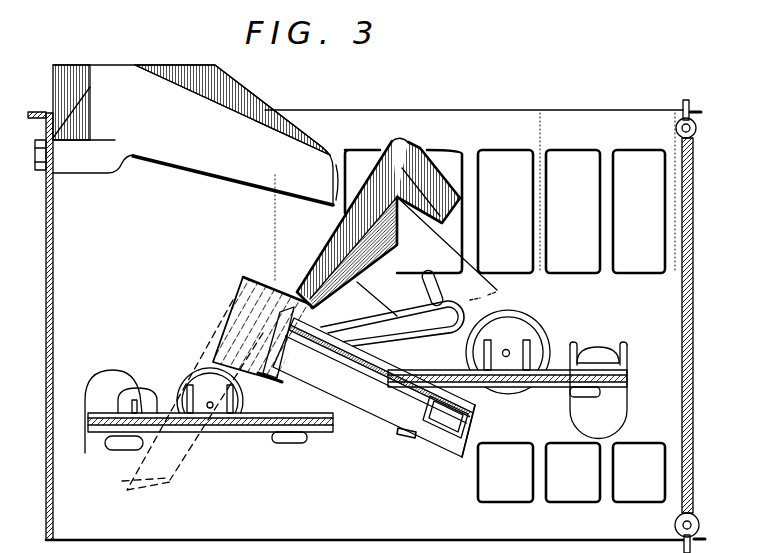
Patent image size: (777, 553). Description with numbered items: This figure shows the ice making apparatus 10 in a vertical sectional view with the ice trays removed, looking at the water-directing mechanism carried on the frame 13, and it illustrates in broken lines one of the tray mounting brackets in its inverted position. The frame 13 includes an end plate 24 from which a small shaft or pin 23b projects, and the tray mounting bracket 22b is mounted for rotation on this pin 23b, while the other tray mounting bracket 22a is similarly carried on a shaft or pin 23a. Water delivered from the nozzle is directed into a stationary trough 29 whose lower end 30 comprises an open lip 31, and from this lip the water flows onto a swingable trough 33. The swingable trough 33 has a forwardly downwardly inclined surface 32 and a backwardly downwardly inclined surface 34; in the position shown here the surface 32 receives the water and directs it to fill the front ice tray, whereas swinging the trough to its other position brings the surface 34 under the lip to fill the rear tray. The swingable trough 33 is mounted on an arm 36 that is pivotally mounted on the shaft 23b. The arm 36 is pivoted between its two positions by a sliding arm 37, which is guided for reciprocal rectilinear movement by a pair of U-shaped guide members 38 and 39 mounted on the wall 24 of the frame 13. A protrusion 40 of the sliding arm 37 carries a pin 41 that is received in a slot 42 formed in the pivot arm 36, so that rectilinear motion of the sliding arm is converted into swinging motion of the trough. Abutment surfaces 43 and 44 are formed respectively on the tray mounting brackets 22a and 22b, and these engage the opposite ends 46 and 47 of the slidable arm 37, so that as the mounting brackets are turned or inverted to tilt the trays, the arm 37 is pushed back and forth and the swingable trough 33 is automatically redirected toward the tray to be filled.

The ice making apparatus 10 is at (562, 92).
The frame 13 is at (690, 222).
The tray mounting bracket 22a is at (265, 422).
The tray mounting bracket 22b is at (581, 370).
The shaft or pin 23a is at (210, 410).
The shaft or pin 23b is at (510, 354).
The end plate 24 is at (345, 512).
The stationary trough 29 is at (187, 73).
The lower end 30 is at (335, 205).
The open lip 31 is at (340, 180).
The forwardly downwardly inclined surface 32 is at (433, 161).
The swingable trough 33 is at (408, 139).
The backwardly downwardly inclined surface 34 is at (300, 268).
The arm 36 is at (497, 312).
The sliding arm 37 is at (353, 356).
The U-shaped guide member 38 is at (302, 337).
The U-shaped guide member 39 is at (414, 439).
The protrusion 40 is at (424, 311).
The pin 41 is at (489, 280).
The slot 42 is at (447, 280).
The abutment surface 43 is at (147, 395).
The abutment surface 44 is at (585, 392).
The end of slidable arm 46 is at (273, 336).
The end of slidable arm 47 is at (477, 424).